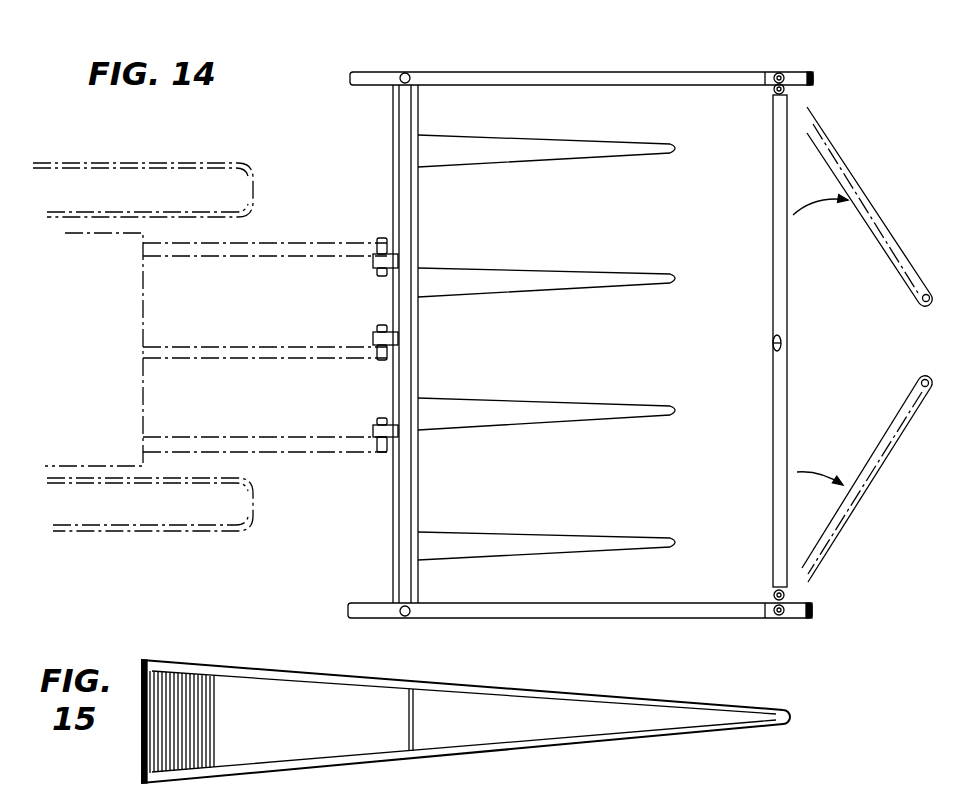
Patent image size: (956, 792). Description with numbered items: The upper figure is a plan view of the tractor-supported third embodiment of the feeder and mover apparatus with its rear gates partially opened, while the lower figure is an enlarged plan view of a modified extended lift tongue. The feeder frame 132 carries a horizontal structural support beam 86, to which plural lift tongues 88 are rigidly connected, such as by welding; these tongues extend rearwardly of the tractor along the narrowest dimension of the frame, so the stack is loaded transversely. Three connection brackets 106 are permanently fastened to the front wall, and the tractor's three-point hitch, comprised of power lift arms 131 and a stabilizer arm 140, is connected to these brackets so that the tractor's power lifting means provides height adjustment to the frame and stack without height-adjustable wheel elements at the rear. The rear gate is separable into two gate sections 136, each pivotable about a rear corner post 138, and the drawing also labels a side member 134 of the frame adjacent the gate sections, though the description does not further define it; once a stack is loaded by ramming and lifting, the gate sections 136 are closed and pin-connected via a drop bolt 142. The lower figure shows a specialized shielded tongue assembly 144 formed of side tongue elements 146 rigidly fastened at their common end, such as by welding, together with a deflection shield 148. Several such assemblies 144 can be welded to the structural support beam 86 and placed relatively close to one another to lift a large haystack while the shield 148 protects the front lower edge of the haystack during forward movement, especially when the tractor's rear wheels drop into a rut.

In FIG. 14, the structural support beam 86 is at (420, 233).
In FIG. 14, the lift tongues 88 is at (592, 160).
In FIG. 14, the connection brackets 106 is at (373, 262).
In FIG. 14, the power lift arms 131 is at (275, 240).
In FIG. 14, the feeder frame 132 is at (608, 60).
In FIG. 14, the pivoting side bar 134 is at (815, 330).
In FIG. 14, the gate sections 136 is at (893, 213).
In FIG. 14, the rear corner post 138 is at (787, 73).
In FIG. 14, the stabilizer arm 140 is at (183, 355).
In FIG. 14, the drop bolt 142 is at (782, 345).
In FIG. 15, the shielded tongue assembly 144 is at (466, 722).
In FIG. 15, the side tongue elements 146 is at (566, 692).
In FIG. 15, the deflection shield 148 is at (292, 731).